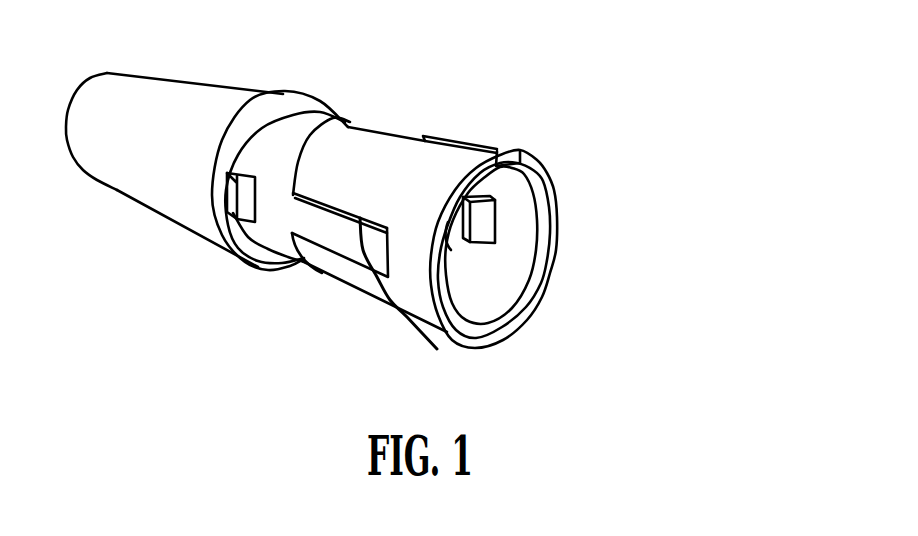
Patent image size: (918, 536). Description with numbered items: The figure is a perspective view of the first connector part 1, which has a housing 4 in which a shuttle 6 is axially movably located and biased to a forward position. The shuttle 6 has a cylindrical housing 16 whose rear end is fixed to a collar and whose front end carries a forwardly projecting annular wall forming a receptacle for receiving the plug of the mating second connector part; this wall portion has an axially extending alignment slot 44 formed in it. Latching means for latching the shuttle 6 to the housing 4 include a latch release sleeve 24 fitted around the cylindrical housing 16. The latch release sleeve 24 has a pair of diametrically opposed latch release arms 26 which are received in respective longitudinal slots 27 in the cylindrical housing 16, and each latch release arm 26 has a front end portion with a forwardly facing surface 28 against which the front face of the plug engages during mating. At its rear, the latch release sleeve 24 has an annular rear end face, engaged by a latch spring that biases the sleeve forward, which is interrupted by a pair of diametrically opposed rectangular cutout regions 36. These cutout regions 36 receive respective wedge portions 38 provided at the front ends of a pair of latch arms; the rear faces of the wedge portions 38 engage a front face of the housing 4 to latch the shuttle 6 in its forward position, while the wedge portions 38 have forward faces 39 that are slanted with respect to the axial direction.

The first connector part 1 is at (415, 83).
The housing 4 is at (145, 103).
The shuttle 6 is at (366, 309).
The cylindrical housing 16 is at (387, 150).
The latch release sleeve 24 is at (305, 132).
The latch release arm 26 is at (333, 232).
The longitudinal slot 27 is at (412, 304).
The forwardly facing surface 28 is at (495, 220).
The rectangular cutout region 36 is at (240, 184).
The wedge portion 38 is at (225, 210).
The forward face 39 is at (222, 180).
The alignment slot 44 is at (487, 143).